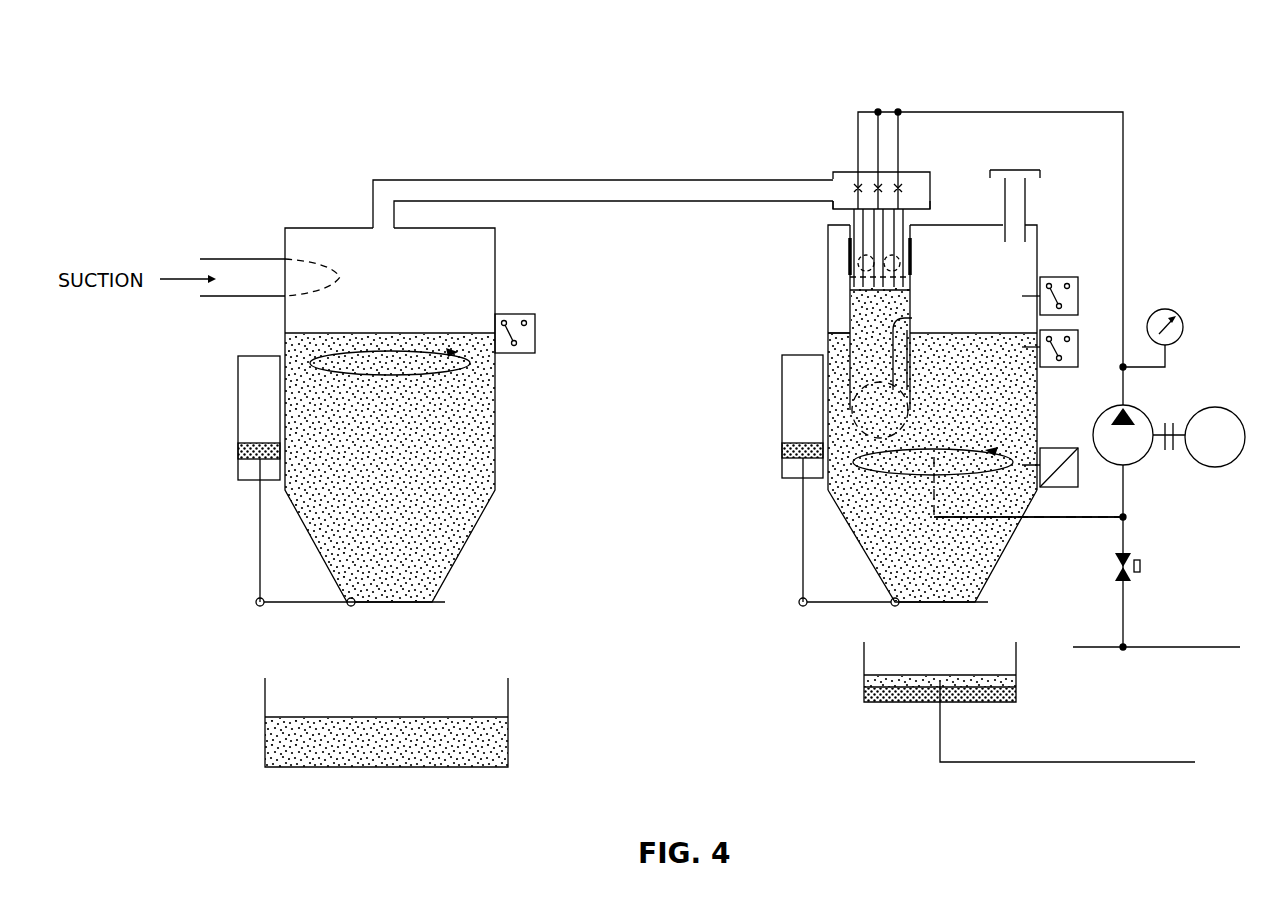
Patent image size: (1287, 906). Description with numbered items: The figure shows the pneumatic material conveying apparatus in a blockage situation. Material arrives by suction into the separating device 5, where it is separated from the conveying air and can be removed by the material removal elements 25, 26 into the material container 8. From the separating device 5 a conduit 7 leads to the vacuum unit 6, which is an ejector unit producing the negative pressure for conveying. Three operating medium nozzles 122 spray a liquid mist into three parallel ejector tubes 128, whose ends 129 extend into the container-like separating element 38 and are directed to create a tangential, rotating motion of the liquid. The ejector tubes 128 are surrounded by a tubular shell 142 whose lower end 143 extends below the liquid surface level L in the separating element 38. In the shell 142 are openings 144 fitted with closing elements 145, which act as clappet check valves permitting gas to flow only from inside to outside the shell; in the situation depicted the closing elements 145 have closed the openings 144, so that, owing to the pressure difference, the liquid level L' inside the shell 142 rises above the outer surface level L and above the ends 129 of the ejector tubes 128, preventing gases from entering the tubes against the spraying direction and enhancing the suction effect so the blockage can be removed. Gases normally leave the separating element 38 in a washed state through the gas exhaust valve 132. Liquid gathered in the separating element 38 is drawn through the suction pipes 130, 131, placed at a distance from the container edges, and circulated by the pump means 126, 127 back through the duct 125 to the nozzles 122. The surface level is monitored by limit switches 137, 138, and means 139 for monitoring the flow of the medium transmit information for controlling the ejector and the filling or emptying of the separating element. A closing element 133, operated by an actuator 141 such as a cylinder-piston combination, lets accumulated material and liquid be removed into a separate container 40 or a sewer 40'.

The separating device 5 is at (493, 443).
The vacuum unit 6 is at (815, 88).
The conduit 7 is at (605, 179).
The material container 8 is at (508, 720).
The material removal element 25 is at (415, 602).
The material removal element 26 is at (237, 398).
The separating element 38 is at (978, 575).
The separate container 40 is at (970, 672).
The sewer 40' is at (1067, 722).
The operating medium nozzle 122 is at (855, 188).
The duct 125 is at (1060, 112).
The pump means 126 is at (1130, 463).
The pump means 127 is at (1213, 467).
The ejector tube 128 is at (852, 212).
The end of the ejector tube 129 is at (850, 288).
The suction pipe 130 is at (930, 497).
The suction pipe 131 is at (997, 520).
The gas exhaust valve 132 is at (1028, 190).
The closing element 133 is at (958, 602).
The limit switch 137 is at (1057, 277).
The limit switch 138 is at (1056, 367).
The means for monitoring the flow of the medium 139 is at (1060, 487).
The actuator 141 is at (782, 405).
The shell part 142 is at (910, 296).
The lower end of the shell 143 is at (912, 322).
The outlet opening 144 is at (910, 278).
The closing element 145 is at (912, 248).
The liquid surface level L is at (804, 323).
The liquid surface level L' is at (844, 267).